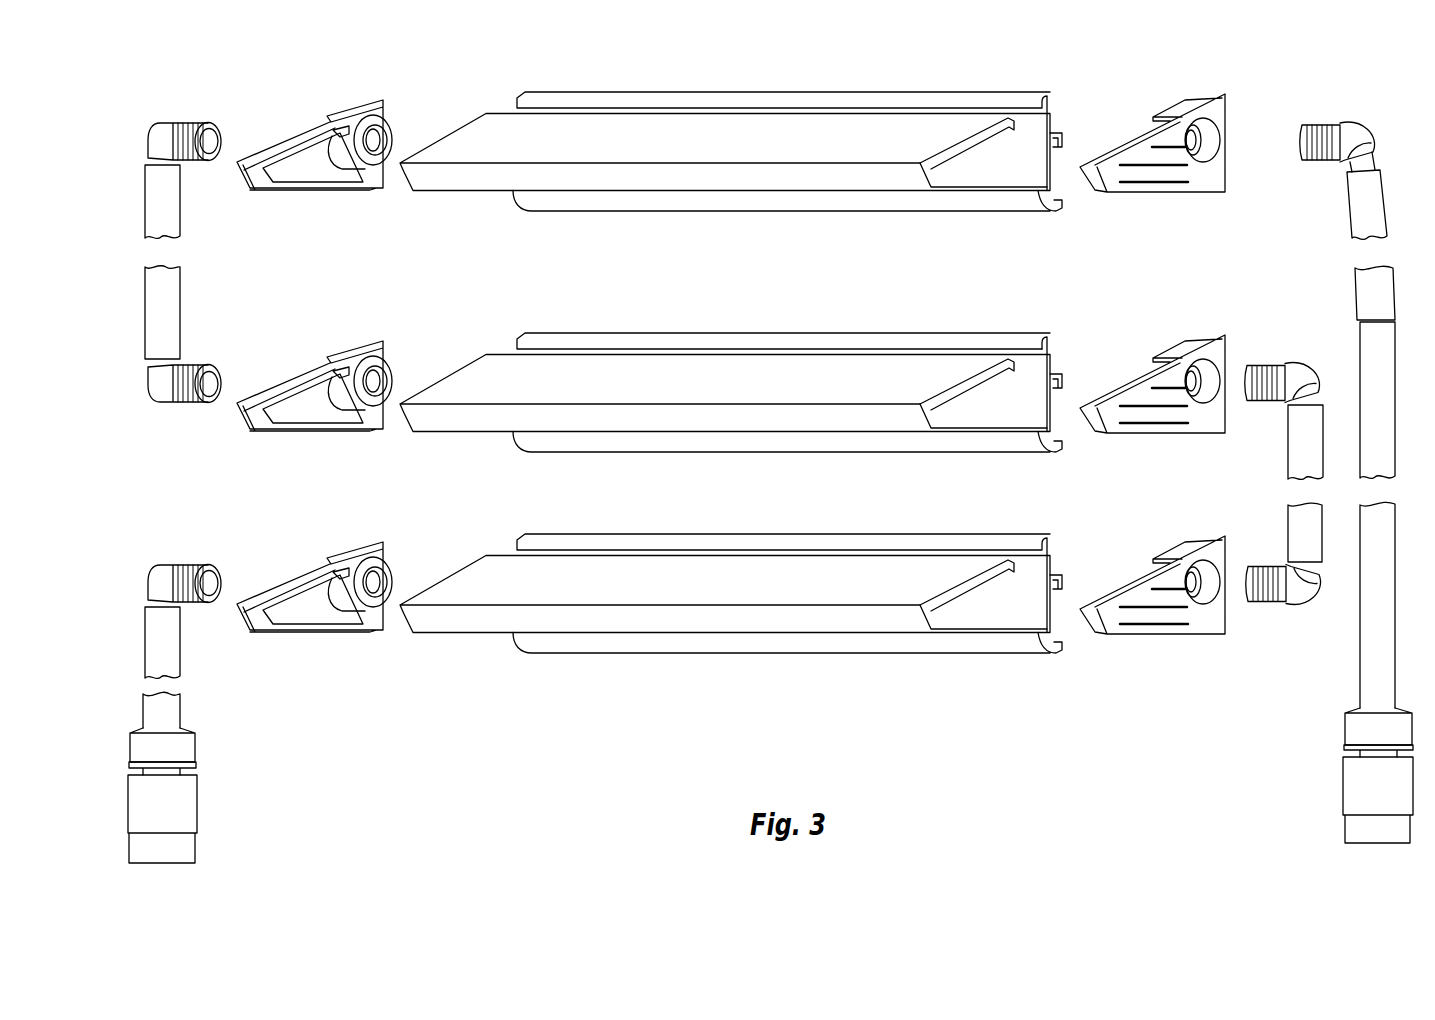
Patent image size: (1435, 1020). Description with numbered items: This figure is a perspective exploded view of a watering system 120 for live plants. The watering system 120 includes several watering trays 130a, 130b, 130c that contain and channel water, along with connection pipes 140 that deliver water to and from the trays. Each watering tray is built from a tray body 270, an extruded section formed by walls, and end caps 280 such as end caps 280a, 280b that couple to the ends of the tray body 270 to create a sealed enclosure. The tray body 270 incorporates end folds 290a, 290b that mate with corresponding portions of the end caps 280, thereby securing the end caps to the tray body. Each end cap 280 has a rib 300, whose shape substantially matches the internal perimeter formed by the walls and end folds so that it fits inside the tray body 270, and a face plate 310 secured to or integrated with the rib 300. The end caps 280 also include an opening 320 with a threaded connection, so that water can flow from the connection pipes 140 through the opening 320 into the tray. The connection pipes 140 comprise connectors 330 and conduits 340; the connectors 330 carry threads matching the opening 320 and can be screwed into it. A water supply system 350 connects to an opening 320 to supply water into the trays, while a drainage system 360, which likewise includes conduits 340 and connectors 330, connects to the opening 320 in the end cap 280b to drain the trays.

The watering system 120 is at (1100, 88).
The watering tray 130a is at (506, 200).
The watering tray 130b is at (767, 392).
The watering tray 130c is at (731, 628).
The connection pipe 140 is at (202, 301).
The tray body 270 is at (725, 640).
The end cap 280 is at (1247, 87).
The end cap 280a is at (1178, 623).
The end cap 280b is at (268, 636).
The end fold 290a is at (1085, 355).
The end fold 290b is at (983, 353).
The rib 300 is at (361, 106).
The face plate 310 is at (1123, 649).
The opening 320 is at (1242, 616).
The connector 330 is at (1355, 137).
The conduit 340 is at (1367, 288).
The water supply system 350 is at (1338, 658).
The drainage system 360 is at (220, 780).